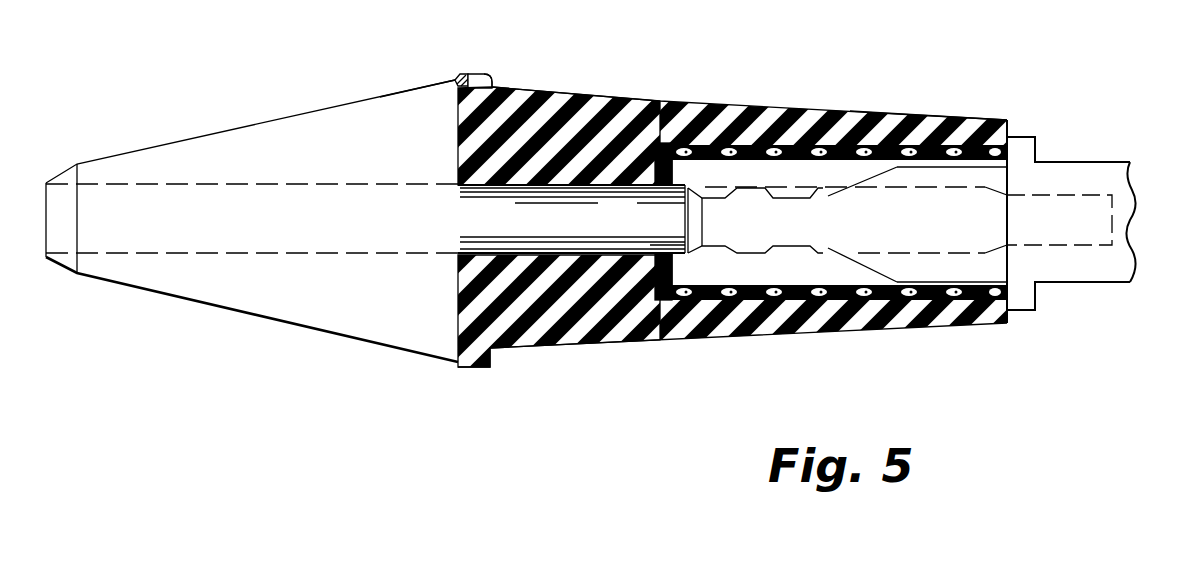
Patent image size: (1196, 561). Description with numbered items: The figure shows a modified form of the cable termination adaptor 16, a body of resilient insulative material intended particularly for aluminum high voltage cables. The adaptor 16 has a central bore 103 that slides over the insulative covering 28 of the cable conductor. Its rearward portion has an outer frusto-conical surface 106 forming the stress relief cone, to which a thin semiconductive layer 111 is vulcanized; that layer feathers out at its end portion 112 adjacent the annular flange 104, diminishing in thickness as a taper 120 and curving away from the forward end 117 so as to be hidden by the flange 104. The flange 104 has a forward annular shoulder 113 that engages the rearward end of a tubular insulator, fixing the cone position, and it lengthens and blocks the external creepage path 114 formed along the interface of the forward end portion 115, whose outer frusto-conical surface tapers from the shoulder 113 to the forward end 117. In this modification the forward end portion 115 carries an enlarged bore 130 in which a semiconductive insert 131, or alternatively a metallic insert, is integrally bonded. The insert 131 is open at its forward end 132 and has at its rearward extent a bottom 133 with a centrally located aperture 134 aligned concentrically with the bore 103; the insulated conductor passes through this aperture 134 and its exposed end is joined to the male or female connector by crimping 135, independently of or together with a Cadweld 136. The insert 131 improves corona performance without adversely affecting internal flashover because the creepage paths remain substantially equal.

The frusto-conical surface 106 is at (300, 114).
The end portion of semiconductive layer 112 is at (447, 80).
The semiconductive layer 111 is at (463, 74).
The annular flange 104 is at (490, 74).
The forward annular shoulder 113 is at (497, 76).
The taper 120 is at (497, 82).
The cable termination adaptor 16 is at (568, 128).
The external creepage path 114 is at (690, 103).
The forward end portion 115 is at (805, 111).
The semiconductive insert 131 is at (923, 115).
The Cadweld 136 is at (978, 143).
The forward end 117 is at (972, 165).
The forward end of insert 132 is at (1008, 150).
The crimping 135 is at (752, 215).
The insulative covering 28 is at (571, 219).
The central bore 103 is at (505, 186).
The bottom 133 is at (600, 206).
The aperture 134 is at (662, 229).
The enlarged bore 130 is at (738, 300).